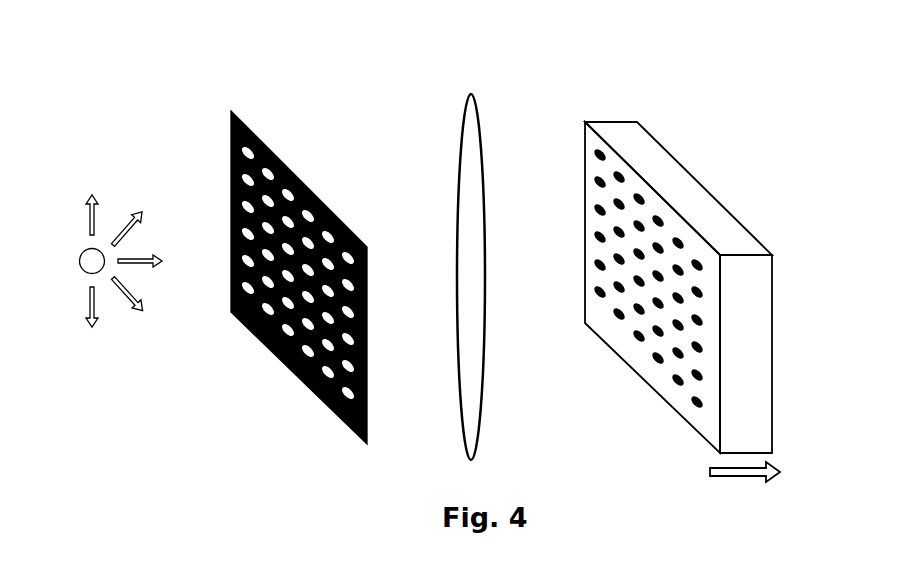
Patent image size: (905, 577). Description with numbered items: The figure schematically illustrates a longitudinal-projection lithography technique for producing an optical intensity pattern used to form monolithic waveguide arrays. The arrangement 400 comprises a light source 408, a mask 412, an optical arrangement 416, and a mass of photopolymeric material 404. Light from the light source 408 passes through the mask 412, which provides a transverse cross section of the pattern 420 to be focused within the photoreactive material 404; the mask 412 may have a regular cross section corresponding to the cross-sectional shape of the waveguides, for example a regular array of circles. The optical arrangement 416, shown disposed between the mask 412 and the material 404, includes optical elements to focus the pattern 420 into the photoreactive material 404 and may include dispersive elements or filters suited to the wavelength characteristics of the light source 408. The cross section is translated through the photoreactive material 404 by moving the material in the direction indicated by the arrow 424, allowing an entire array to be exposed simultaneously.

The arrangement 400 is at (317, 85).
The mass of photopolymeric material 404 is at (702, 287).
The light source 408 is at (85, 250).
The mask 412 is at (295, 172).
The optical arrangement 416 is at (481, 136).
The pattern 420 is at (644, 361).
The arrow 424 is at (743, 478).